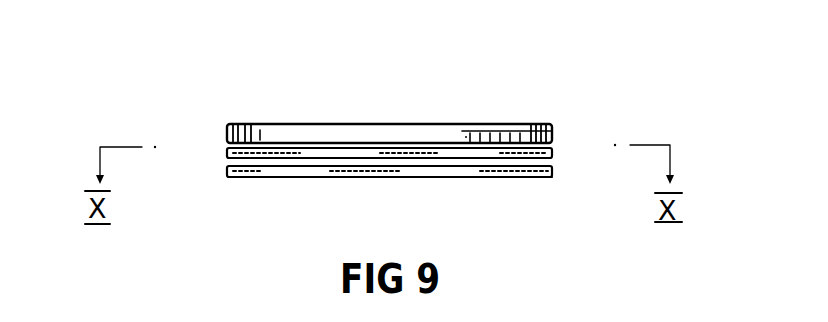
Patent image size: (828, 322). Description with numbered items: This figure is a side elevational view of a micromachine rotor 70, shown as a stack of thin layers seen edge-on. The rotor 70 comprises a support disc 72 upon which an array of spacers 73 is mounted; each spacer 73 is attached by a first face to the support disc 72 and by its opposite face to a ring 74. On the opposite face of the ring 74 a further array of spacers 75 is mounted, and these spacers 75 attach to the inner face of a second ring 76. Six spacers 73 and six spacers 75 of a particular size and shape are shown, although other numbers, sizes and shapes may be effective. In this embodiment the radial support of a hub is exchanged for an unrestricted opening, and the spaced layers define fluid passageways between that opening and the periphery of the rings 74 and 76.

The micromachine rotor 70 is at (225, 104).
The support disc 72 is at (540, 123).
The spacers 73 is at (308, 145).
The ring 74 is at (225, 156).
The spacers 75 is at (335, 168).
The ring 76 is at (550, 180).